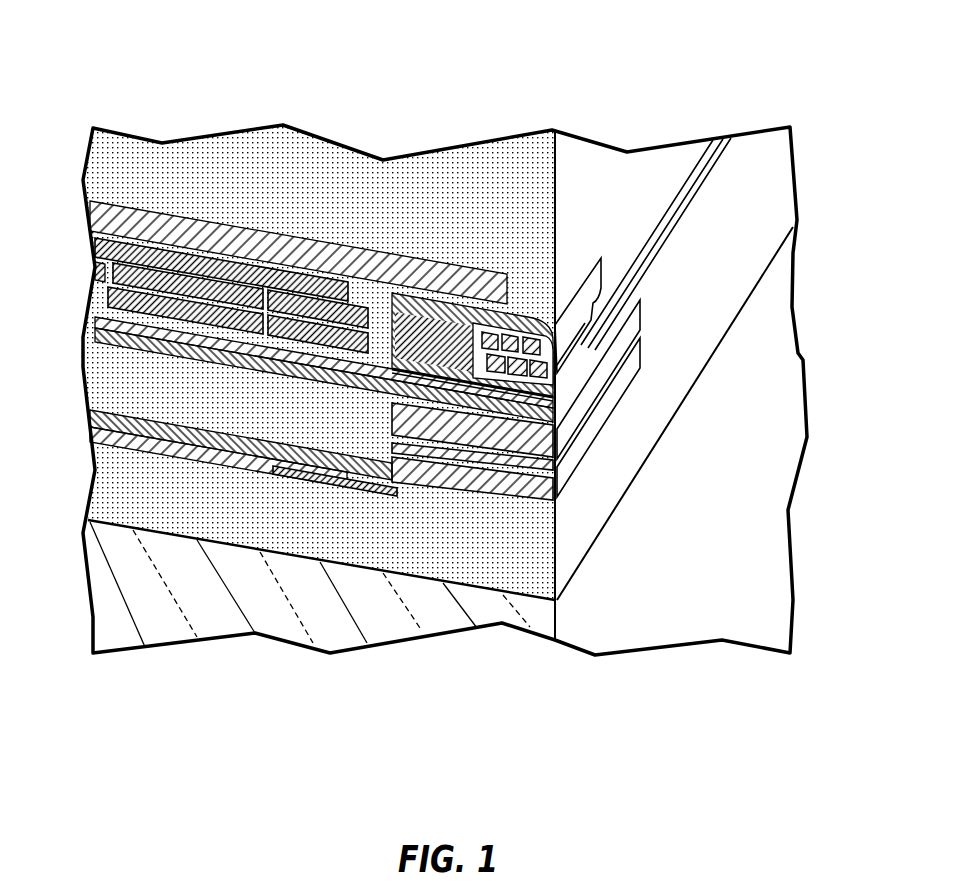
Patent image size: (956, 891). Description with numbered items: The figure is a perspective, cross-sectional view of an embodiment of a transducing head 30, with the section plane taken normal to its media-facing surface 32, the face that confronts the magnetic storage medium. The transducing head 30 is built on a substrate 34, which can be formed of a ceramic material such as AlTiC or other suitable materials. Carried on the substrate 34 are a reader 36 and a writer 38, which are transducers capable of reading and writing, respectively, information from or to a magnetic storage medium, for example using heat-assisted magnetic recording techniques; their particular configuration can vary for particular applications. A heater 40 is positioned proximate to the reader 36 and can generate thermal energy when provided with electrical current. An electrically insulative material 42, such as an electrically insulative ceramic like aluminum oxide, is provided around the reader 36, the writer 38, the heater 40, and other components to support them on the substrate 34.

The transducing head 30 is at (641, 85).
The media-facing surface 32 is at (722, 563).
The substrate 34 is at (165, 623).
The reader 36 is at (562, 468).
The writer 38 is at (595, 318).
The heater 40 is at (347, 478).
The electrically insulative material 42 is at (110, 375).